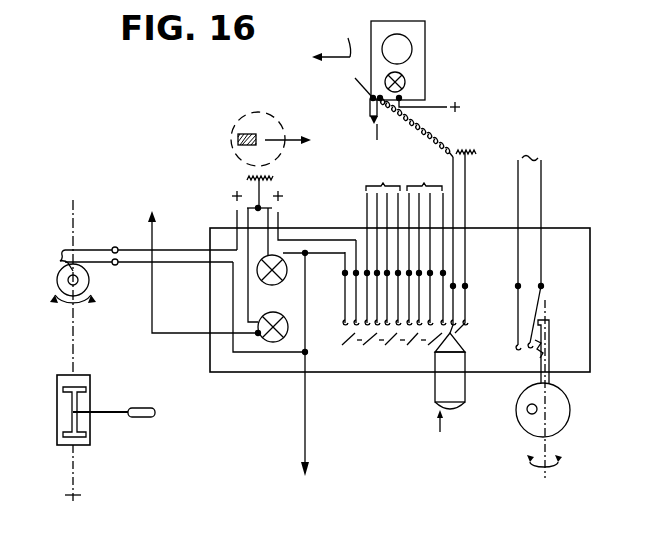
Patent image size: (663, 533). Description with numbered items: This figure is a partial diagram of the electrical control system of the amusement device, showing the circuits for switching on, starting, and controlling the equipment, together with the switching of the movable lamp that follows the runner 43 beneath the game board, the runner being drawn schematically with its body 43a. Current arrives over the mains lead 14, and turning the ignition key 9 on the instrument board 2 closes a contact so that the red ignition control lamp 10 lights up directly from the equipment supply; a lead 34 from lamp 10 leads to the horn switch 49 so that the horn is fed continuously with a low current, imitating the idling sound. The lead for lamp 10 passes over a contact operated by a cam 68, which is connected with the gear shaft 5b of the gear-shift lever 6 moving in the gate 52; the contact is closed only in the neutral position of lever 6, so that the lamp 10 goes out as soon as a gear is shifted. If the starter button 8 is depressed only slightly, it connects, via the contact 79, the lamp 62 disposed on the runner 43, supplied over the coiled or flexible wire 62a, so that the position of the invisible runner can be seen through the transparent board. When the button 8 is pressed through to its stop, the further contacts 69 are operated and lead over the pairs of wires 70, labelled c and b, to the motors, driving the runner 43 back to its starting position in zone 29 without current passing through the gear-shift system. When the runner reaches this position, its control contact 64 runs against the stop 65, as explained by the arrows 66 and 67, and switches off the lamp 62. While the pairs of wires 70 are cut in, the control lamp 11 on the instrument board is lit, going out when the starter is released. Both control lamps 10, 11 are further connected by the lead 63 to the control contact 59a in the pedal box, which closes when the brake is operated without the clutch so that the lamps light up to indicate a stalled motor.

The instrument board 2 is at (592, 345).
The second hollow control shaft 5b is at (72, 467).
The gear-shift lever 6 is at (137, 417).
The starter button 8 is at (440, 385).
The ignition key 9 is at (560, 420).
The ignition control lamp 10 is at (288, 331).
The control lamp 11 is at (275, 285).
The mains lead 14 is at (542, 191).
The zone 29 is at (257, 113).
The lead 34 is at (152, 226).
The runner 43 is at (428, 53).
The relay coil 43a is at (402, 45).
The horn switch 49 is at (200, 258).
The gate 52 is at (57, 413).
The control contact 59a is at (303, 482).
The lamp 62 is at (405, 82).
The coiled or flexible wire 62a is at (428, 129).
The lead 63 is at (307, 409).
The control contact 64 is at (370, 108).
The stop 65 is at (238, 139).
The arrow 66 is at (331, 45).
The arrow 67 is at (284, 146).
The cam 68 is at (62, 263).
The contacts 69 is at (380, 342).
The pairs of wires 70 is at (383, 164).
The contact 79 is at (462, 340).